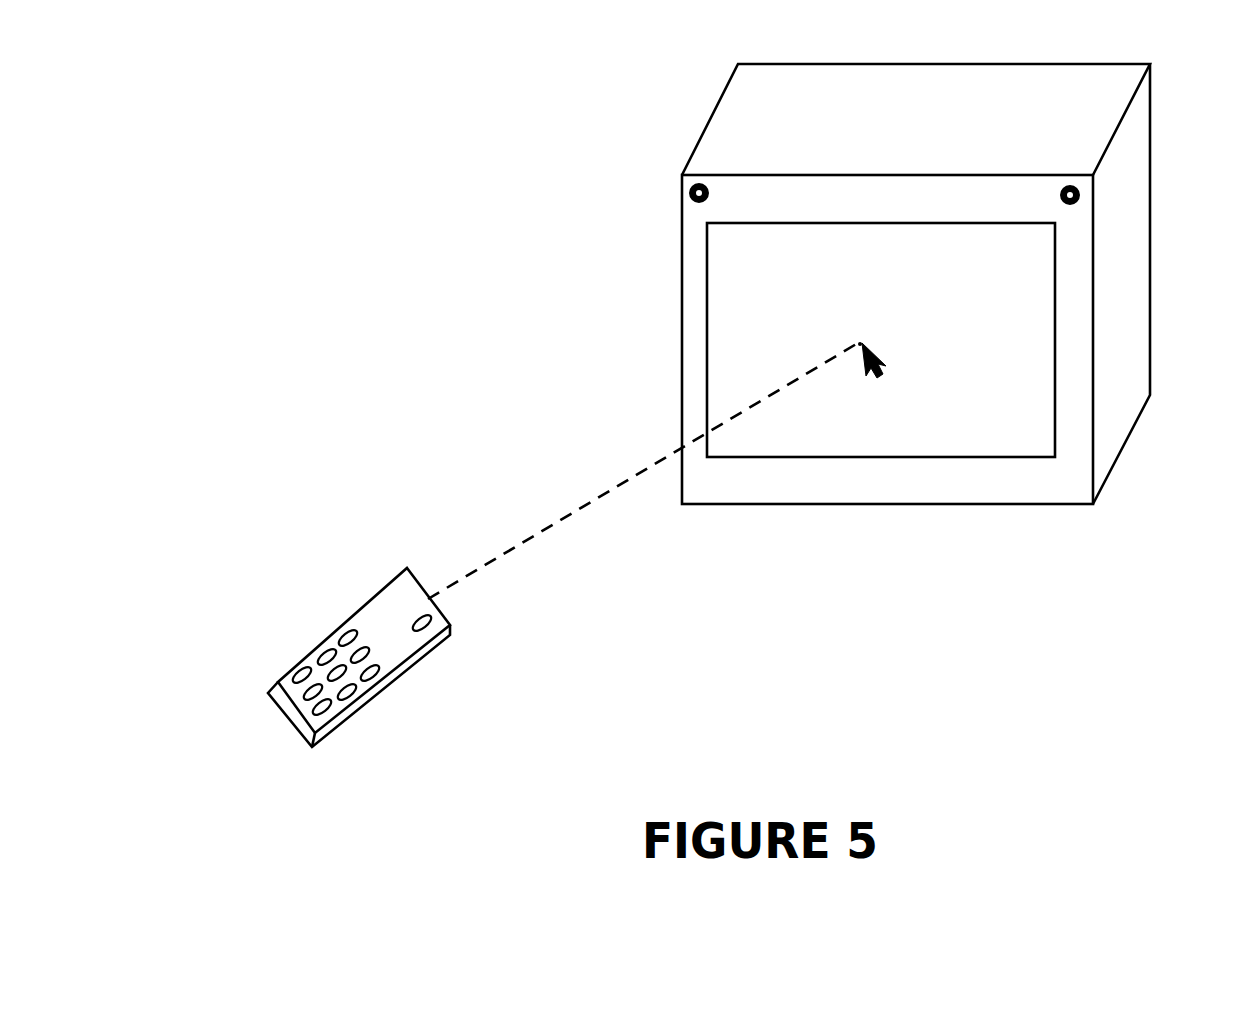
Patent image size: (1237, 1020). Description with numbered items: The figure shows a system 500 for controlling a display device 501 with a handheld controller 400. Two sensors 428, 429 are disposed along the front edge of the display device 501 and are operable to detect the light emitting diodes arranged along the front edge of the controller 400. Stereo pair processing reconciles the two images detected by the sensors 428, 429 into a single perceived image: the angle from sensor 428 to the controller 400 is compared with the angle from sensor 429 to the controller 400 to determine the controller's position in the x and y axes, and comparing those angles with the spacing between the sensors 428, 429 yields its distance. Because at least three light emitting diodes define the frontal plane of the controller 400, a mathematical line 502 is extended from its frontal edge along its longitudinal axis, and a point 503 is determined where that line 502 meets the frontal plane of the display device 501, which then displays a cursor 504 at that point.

The system environment 500 is at (177, 60).
The display device 501 is at (693, 303).
The sensor 428 is at (688, 192).
The sensor 429 is at (1082, 193).
The mathematical line 502 is at (583, 503).
The point 503 is at (884, 357).
The cursor 504 is at (857, 340).
The controller 400 is at (390, 613).